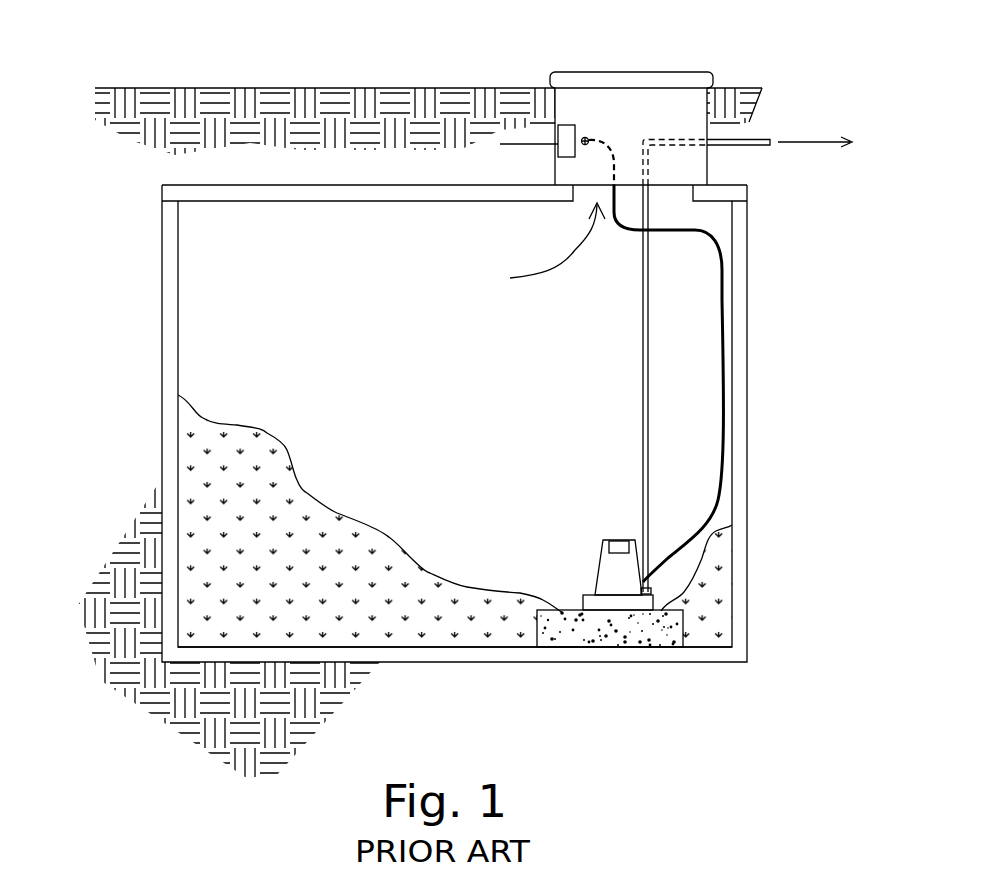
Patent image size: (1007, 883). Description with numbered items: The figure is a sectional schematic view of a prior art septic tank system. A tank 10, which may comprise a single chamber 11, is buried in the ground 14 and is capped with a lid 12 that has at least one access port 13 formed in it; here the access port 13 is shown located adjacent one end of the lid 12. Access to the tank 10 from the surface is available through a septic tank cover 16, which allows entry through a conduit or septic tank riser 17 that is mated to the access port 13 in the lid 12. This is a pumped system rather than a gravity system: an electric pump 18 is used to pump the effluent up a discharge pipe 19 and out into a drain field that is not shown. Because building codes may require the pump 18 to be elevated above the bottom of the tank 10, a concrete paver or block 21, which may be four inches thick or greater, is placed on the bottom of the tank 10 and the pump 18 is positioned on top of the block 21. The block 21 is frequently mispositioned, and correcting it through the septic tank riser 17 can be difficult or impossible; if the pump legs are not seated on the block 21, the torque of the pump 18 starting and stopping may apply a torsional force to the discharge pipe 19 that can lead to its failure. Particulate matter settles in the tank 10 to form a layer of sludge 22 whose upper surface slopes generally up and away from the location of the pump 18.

The tank 10 is at (172, 642).
The single chamber 11 is at (242, 633).
The lid 12 is at (262, 192).
The access port 13 is at (557, 251).
The ground 14 is at (328, 105).
The septic tank cover 16 is at (636, 72).
The septic tank riser 17 is at (708, 168).
The electric pump 18 is at (607, 568).
The discharge pipe 19 is at (645, 432).
The concrete paver or block 21 is at (640, 632).
The sludge 22 is at (307, 490).